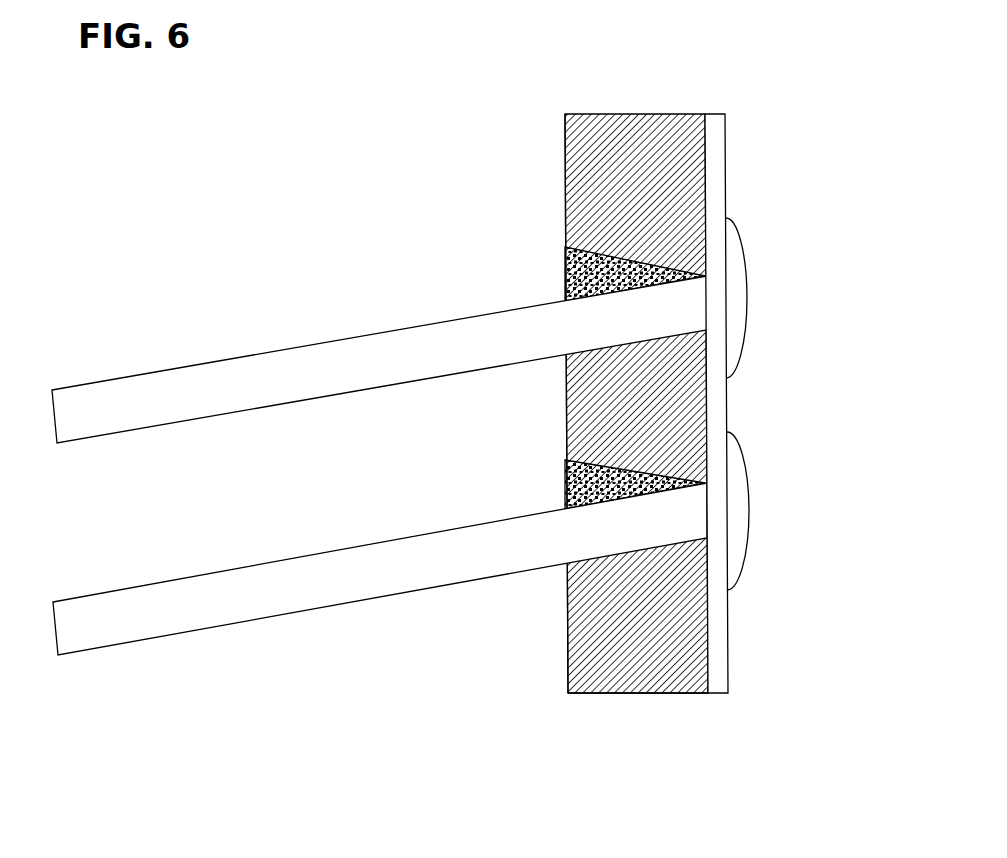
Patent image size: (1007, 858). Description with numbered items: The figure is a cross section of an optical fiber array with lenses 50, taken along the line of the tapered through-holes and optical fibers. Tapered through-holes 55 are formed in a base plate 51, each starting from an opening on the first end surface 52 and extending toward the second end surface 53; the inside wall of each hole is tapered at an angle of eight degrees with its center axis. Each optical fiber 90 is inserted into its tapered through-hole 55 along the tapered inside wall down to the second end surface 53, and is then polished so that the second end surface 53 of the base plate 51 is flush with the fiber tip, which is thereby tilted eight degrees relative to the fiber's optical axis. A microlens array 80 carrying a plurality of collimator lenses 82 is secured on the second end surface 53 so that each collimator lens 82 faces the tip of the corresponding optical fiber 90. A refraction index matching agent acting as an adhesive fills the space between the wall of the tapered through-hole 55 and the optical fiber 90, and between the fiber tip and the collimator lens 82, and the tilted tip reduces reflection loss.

The optical fiber array with lenses 50 is at (469, 464).
The base plate 51 is at (652, 653).
The first end surface 52 is at (568, 655).
The second end surface 53 is at (692, 680).
The tapered through-hole 55 is at (575, 275).
The microlens array 80 is at (715, 160).
The collimator lens 82 is at (738, 530).
The optical fiber 90 is at (205, 397).